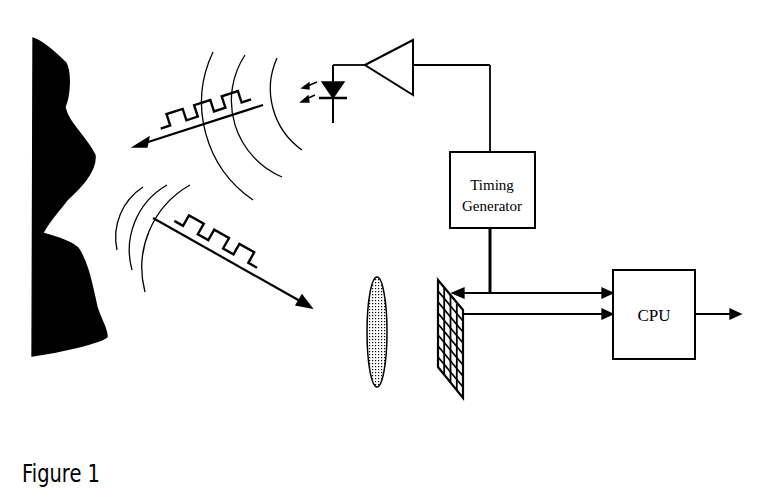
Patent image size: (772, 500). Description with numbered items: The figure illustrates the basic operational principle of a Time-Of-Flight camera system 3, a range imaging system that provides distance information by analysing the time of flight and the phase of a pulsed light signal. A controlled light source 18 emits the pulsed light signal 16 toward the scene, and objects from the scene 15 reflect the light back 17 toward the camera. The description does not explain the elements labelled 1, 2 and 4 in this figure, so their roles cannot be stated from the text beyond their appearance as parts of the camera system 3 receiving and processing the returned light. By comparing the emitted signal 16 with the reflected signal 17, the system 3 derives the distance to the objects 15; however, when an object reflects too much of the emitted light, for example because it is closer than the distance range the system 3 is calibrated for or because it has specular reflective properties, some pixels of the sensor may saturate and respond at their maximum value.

The image sensor 1 is at (465, 361).
The lens 2 is at (372, 357).
The Time-Of-Flight camera system 3 is at (608, 150).
The control/data bus 4 is at (519, 278).
The objects from the scene 15 is at (66, 80).
The emitted pulsed light signal 16 is at (199, 107).
The reflected light signal 17 is at (219, 244).
The controlled light source 18 is at (325, 72).